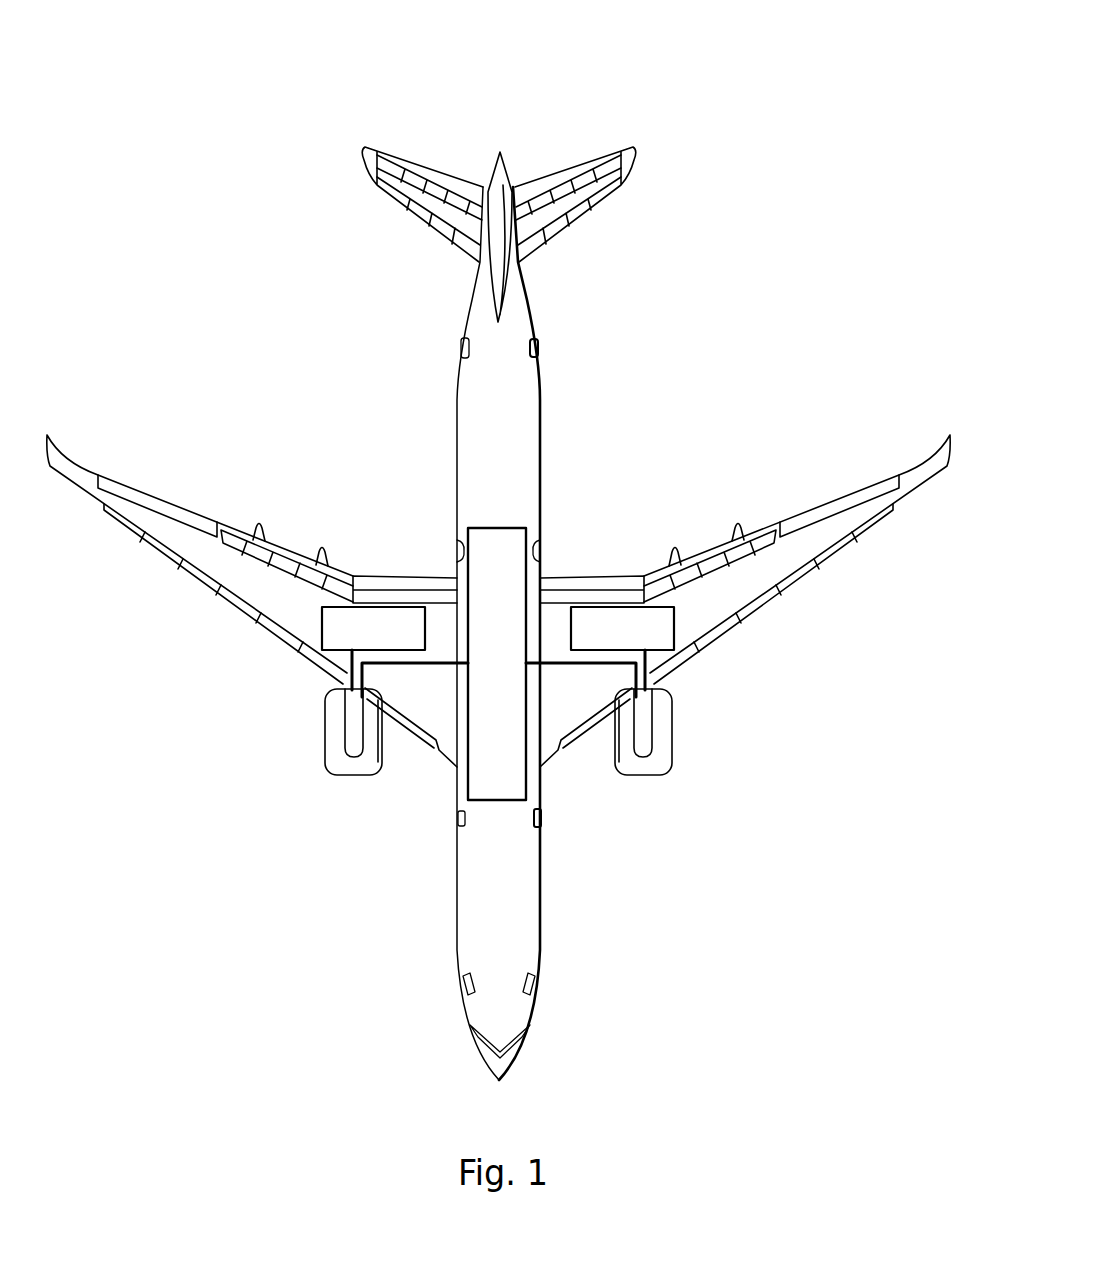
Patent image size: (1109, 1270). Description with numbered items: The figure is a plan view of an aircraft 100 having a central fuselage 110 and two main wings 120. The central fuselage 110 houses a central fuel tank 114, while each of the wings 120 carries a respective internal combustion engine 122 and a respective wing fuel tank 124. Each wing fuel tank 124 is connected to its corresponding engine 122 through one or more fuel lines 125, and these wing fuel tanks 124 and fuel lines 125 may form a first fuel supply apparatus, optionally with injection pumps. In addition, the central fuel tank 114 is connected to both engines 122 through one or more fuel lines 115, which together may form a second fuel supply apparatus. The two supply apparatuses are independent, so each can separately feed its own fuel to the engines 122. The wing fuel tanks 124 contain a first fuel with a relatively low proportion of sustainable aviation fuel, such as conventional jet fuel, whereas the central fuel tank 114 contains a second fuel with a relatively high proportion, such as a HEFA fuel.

The aircraft 100 is at (643, 126).
The central fuselage 110 is at (455, 420).
The central fuel tank 114 is at (535, 790).
The fuel lines 115 is at (423, 668).
The main wings 120 is at (187, 455).
The internal combustion engine 122 is at (325, 745).
The wing fuel tank 124 is at (395, 607).
The fuel lines 125 is at (350, 661).